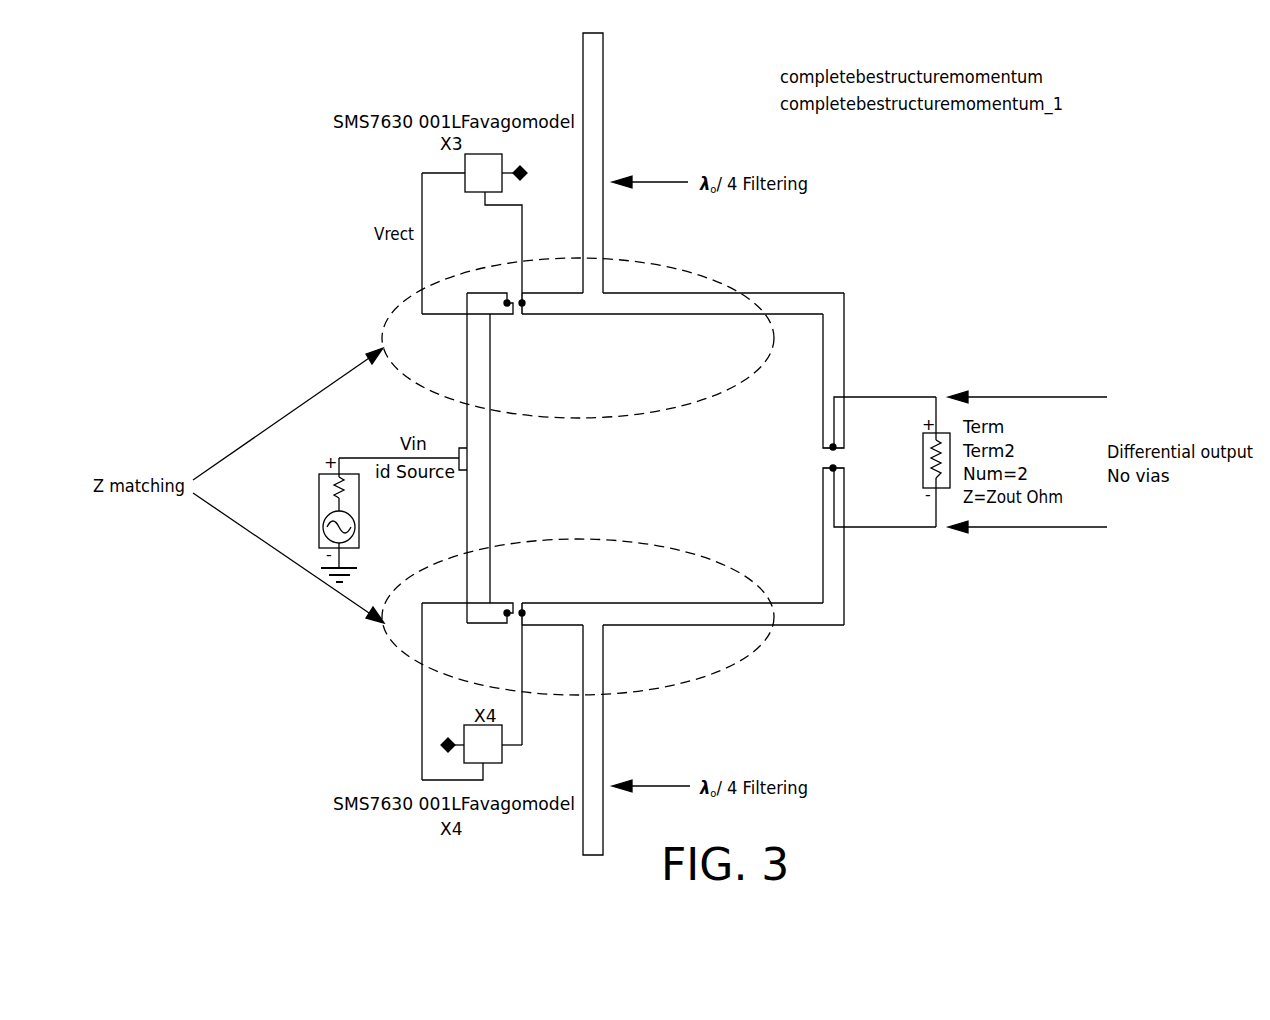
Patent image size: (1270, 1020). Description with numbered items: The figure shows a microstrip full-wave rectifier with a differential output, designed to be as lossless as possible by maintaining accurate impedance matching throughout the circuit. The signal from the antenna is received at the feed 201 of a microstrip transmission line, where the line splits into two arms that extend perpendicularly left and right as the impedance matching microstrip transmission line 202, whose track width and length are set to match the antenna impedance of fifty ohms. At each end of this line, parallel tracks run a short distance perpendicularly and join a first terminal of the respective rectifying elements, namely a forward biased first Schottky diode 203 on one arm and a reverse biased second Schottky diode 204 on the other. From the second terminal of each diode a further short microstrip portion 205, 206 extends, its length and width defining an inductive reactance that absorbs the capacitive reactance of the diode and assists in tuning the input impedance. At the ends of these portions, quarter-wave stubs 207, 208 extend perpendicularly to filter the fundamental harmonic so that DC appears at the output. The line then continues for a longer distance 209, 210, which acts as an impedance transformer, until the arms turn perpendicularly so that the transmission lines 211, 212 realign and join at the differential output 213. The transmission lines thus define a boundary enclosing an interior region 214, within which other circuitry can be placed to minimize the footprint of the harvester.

The feed 201 is at (462, 447).
The impedance matching microstrip transmission line 202 is at (467, 351).
The first Schottky diode 203 is at (503, 163).
The second Schottky diode 204 is at (503, 757).
The further microstrip transmission line portion 205 is at (555, 626).
The further microstrip transmission line portion 206 is at (563, 290).
The λ/4 stub 207 is at (603, 85).
The λ/4 stub 208 is at (603, 748).
The longer microstrip transmission line section 209 is at (785, 628).
The longer microstrip transmission line section 210 is at (770, 292).
The microstrip transmission line joining the differential output 211 is at (845, 352).
The microstrip transmission line joining the differential output 212 is at (845, 598).
The differential output port 213 is at (921, 462).
The loop antenna structure 214 is at (677, 477).